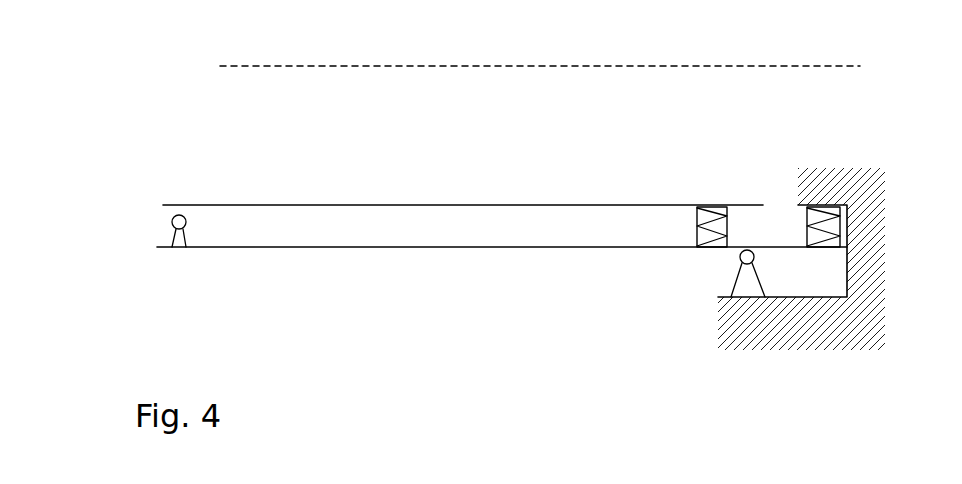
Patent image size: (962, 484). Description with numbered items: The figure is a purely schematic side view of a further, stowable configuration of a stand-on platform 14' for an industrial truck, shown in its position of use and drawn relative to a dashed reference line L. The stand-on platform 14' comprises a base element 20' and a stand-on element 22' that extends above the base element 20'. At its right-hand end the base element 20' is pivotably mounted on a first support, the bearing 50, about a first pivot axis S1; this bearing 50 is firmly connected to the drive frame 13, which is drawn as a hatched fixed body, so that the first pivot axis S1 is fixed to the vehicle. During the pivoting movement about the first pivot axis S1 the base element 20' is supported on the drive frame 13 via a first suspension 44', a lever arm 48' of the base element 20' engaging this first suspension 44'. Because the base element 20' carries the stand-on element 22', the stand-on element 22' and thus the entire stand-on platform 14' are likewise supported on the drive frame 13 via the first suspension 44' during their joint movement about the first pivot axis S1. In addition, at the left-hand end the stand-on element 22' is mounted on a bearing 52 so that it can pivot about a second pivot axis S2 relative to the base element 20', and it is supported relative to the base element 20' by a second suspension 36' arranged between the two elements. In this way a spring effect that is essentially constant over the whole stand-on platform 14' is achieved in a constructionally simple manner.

The longitudinal axis L is at (535, 47).
The stand-on platform 14' is at (180, 118).
The stand-on element 22' is at (463, 163).
The base element 20' is at (502, 289).
The second suspension 36' is at (694, 175).
The first suspension 44' is at (874, 185).
The lever arm 48' is at (819, 326).
The bearing 50 is at (748, 286).
The bearing 52 is at (182, 248).
The drive frame 13 is at (850, 310).
The first pivot axis S1 is at (740, 260).
The second pivot axis S2 is at (172, 219).